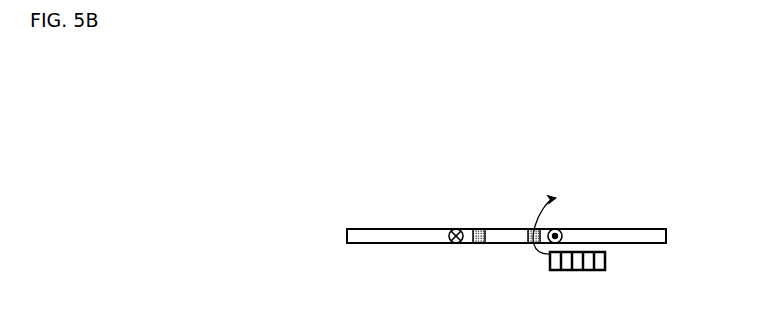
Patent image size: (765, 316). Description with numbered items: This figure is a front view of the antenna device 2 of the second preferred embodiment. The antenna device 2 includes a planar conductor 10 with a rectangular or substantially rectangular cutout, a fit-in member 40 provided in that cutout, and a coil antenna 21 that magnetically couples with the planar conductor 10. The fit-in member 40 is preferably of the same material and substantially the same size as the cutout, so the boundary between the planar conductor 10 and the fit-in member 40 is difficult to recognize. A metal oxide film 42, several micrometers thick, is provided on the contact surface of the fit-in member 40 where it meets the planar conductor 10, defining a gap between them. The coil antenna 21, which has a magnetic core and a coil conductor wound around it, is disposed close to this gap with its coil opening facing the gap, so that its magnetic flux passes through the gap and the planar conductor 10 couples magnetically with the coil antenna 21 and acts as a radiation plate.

The antenna device 2 is at (372, 175).
The planar conductor 10 is at (362, 235).
The coil antenna 21 is at (605, 278).
The fit-in member 40 is at (508, 237).
The metal oxide film 42 is at (478, 232).